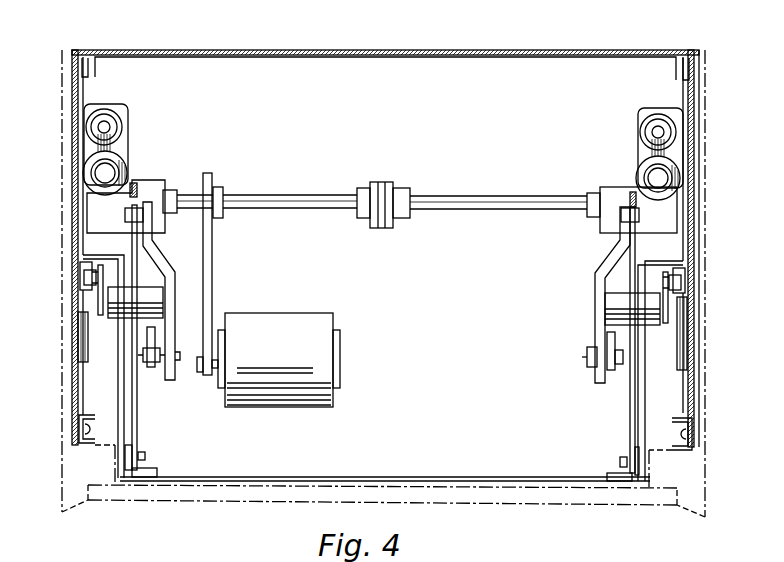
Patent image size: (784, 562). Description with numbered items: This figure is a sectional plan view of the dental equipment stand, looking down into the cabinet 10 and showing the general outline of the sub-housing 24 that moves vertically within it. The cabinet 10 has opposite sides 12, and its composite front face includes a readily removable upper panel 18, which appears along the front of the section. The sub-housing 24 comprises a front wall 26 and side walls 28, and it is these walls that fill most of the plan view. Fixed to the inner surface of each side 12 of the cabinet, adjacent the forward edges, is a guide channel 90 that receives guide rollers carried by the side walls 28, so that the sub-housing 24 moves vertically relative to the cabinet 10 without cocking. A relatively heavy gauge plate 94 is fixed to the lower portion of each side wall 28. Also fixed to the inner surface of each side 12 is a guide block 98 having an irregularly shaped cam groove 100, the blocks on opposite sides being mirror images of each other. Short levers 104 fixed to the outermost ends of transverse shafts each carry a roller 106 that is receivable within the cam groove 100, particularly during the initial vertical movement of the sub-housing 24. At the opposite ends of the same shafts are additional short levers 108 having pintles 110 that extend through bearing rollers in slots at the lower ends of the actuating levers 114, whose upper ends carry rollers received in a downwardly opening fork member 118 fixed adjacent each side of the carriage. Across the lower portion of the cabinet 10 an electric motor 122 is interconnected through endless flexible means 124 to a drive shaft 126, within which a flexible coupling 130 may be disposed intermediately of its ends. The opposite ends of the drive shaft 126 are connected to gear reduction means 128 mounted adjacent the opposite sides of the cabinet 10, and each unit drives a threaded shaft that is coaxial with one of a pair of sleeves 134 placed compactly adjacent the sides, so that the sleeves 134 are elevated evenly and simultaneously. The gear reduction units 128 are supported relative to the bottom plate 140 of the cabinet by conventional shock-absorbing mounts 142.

The cabinet 10 is at (470, 47).
The sides 12 is at (77, 190).
The upper panel 18 is at (302, 495).
The sub-housing 24 is at (447, 472).
The front wall 26 is at (302, 477).
The side walls 28 is at (82, 82).
The guide channels 90 is at (73, 438).
The heavy gauge plate 94 is at (137, 410).
The guide block 98 is at (78, 332).
The cam grooves 100 is at (78, 280).
The short levers 104 is at (100, 295).
The roller 106 is at (85, 270).
The additional short levers 108 is at (148, 333).
The pintles 110 is at (178, 353).
The actuating levers 114 is at (157, 258).
The fork member 118 is at (140, 187).
The electric motor 122 is at (305, 322).
The endless flexible means 124 is at (210, 270).
The drive shaft 126 is at (328, 198).
The gear reduction means 128 is at (130, 167).
The flexible coupling 130 is at (387, 220).
The sleeves 134 is at (93, 167).
The bottom plate 140 is at (558, 77).
The shock-absorbing mounts 142 is at (110, 118).